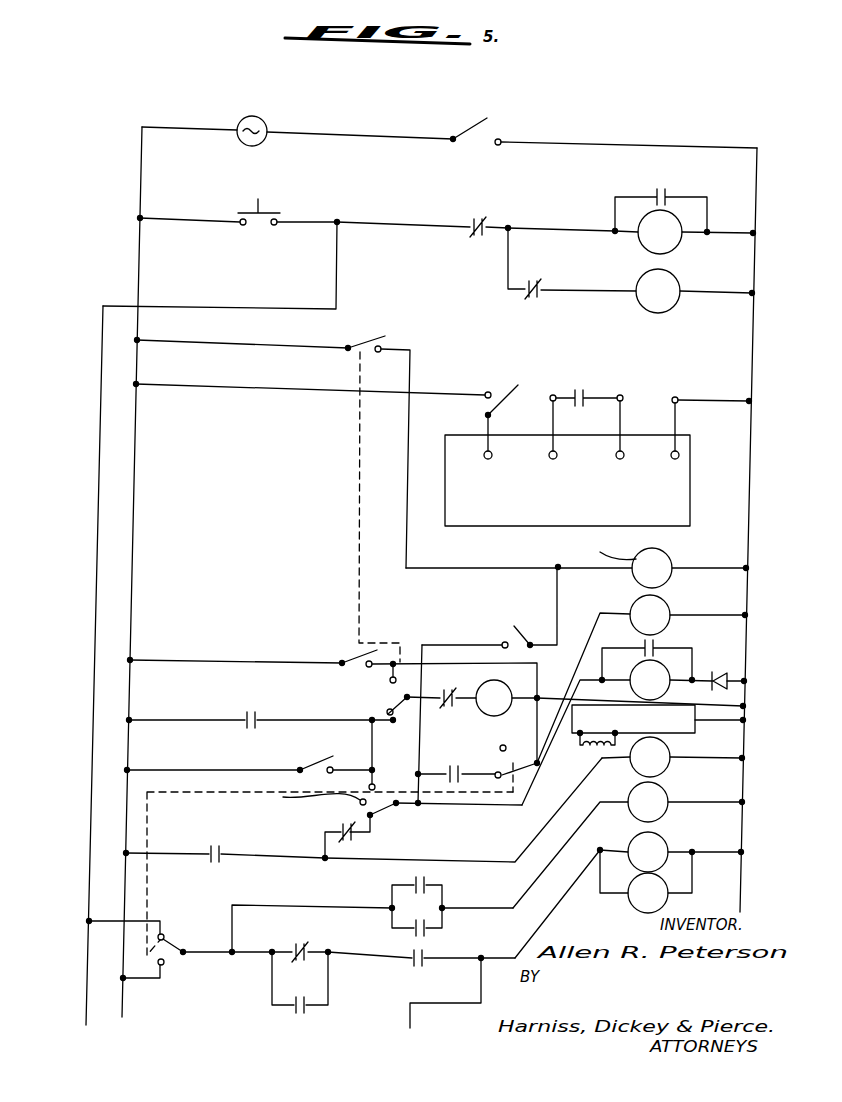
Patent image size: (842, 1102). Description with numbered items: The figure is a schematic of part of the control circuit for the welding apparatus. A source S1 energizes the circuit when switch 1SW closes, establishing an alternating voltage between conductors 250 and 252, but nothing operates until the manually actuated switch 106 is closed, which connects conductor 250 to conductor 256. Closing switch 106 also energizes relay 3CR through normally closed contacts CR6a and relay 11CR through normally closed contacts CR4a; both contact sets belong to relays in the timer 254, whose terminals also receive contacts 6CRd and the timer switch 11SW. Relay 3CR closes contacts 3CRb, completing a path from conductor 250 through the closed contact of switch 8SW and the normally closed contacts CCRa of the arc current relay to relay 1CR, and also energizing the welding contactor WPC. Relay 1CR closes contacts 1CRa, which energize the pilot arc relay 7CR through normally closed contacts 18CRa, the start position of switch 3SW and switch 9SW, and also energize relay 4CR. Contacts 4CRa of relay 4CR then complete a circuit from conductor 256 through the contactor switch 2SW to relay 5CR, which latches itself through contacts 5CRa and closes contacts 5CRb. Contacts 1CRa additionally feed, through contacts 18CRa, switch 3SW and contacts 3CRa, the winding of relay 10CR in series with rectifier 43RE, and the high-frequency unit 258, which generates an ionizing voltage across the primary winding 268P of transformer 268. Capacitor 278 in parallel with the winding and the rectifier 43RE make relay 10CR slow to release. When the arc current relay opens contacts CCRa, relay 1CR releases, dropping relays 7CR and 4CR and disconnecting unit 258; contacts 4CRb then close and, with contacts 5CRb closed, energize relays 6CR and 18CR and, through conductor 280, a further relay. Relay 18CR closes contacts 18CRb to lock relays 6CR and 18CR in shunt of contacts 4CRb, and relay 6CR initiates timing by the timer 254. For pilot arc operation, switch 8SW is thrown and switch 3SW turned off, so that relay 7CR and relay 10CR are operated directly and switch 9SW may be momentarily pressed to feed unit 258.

The source S1 is at (266, 124).
The switch 1SW is at (470, 126).
The switch 106 is at (265, 211).
The normally closed contacts CR6a is at (478, 221).
The normally closed contacts CR4a is at (543, 272).
The relay 3CR is at (632, 221).
The relay 11CR is at (695, 291).
The conductor 250 is at (137, 440).
The conductor 256 is at (103, 325).
The switch 8SW is at (357, 437).
The timer switch 11SW is at (500, 404).
The relay contact 6CRd is at (592, 372).
The conductor 252 is at (749, 418).
The timer 254 is at (718, 480).
The pilot arc relay 7CR is at (577, 561).
The switch 9SW is at (516, 633).
The contacts of arc current relay CCRa is at (448, 688).
The relay 1CR is at (611, 698).
The contacts 3CRb is at (250, 711).
The contactor switch 2SW is at (178, 754).
The contacts 3CRa is at (463, 752).
The switch 3SW is at (455, 815).
The normally closed contacts 18CRa is at (344, 822).
The contacts 1CRa is at (225, 836).
The welding contactor WPC is at (642, 679).
The relay 10CR is at (634, 732).
The capacitor 278 is at (662, 652).
The rectifier 43RE is at (715, 673).
The high-frequency unit 258 is at (683, 736).
The transformer 268 is at (609, 757).
The primary winding 268P is at (578, 748).
The relay 4CR is at (673, 757).
The relay 5CR is at (629, 845).
The relay 6CR is at (629, 895).
The relay 18CR is at (646, 881).
The contacts 4CRb is at (303, 932).
The contacts 18CRb is at (298, 1013).
The contacts 5CRb is at (416, 966).
The conductor 280 is at (438, 1003).
The contacts 5CRa is at (424, 876).
The contacts 4CRa is at (418, 936).